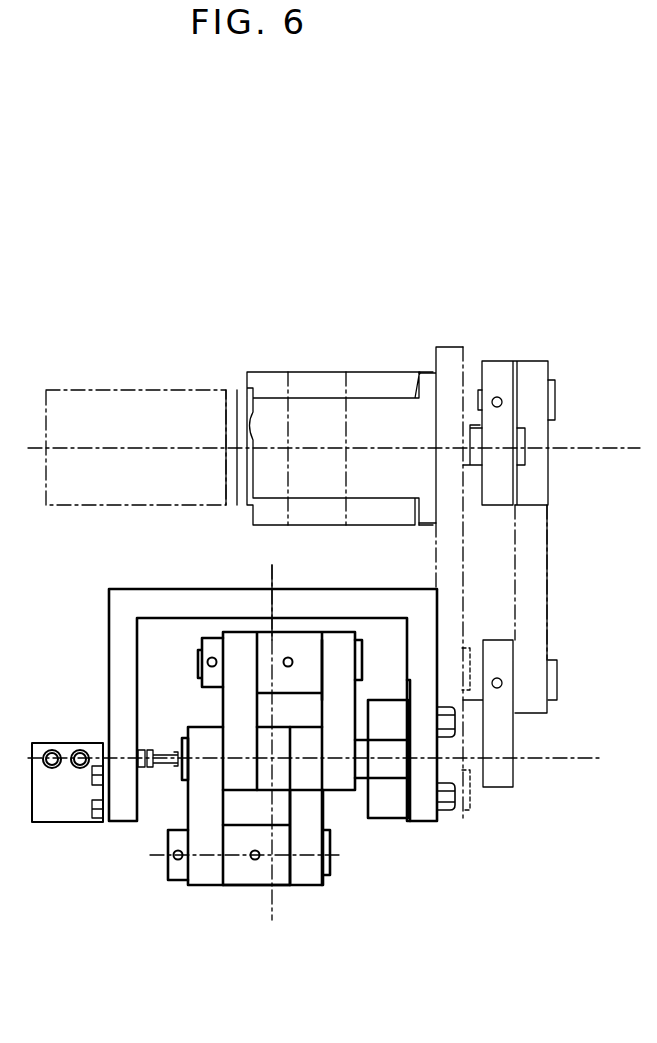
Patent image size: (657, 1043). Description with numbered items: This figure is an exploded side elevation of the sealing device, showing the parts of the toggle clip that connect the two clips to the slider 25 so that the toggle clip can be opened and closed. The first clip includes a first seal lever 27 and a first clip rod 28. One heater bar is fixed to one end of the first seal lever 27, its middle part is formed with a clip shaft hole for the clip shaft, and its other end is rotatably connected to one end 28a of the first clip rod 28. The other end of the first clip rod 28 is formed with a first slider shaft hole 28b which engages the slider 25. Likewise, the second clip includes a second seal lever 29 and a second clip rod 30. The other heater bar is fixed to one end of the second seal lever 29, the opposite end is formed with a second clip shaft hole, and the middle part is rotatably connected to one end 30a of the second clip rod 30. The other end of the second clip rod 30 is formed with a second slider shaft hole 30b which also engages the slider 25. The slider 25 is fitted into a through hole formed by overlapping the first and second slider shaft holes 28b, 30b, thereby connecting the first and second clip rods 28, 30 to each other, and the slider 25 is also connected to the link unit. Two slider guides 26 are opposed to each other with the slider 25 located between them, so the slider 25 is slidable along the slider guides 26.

The slider 25 is at (383, 767).
The slider guide 26 is at (395, 793).
The first seal lever 27 is at (280, 637).
The first clip rod 28 is at (240, 703).
The one end of the first clip rod 28a is at (342, 665).
The first slider shaft hole 28b is at (240, 758).
The second seal lever 29 is at (240, 875).
The second clip rod 30 is at (307, 812).
The one end of the second clip rod 30a is at (307, 857).
The second slider shaft hole 30b is at (310, 758).